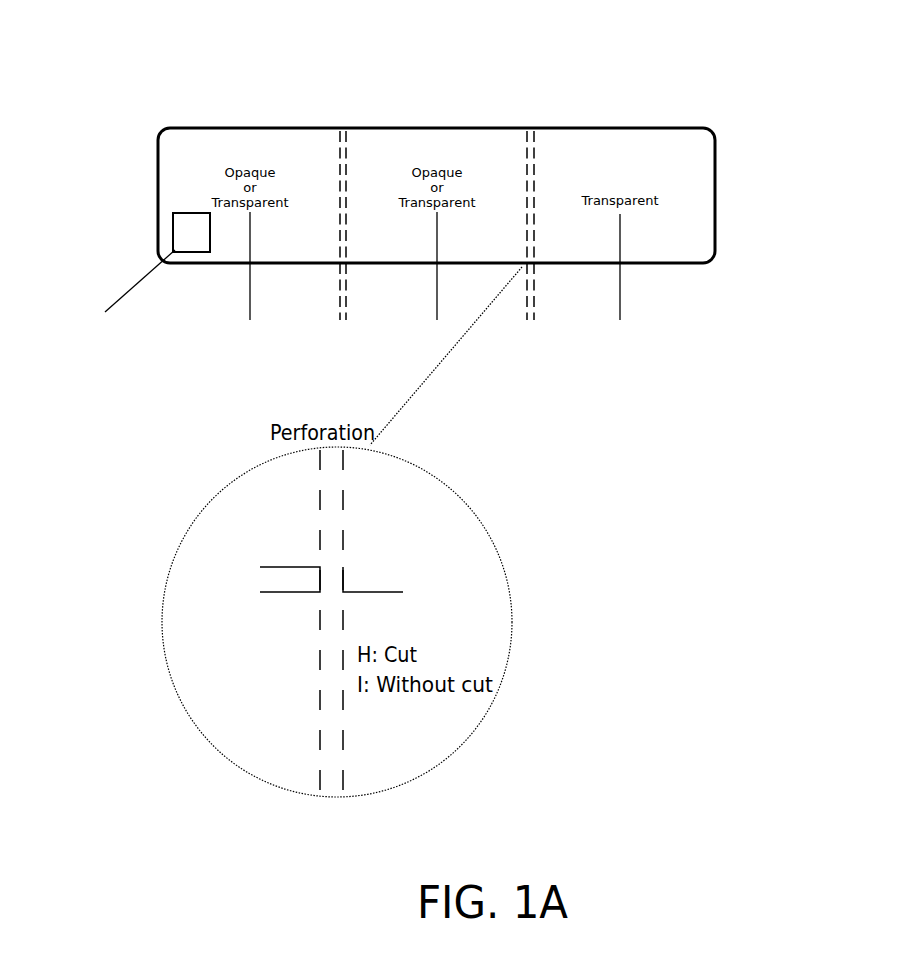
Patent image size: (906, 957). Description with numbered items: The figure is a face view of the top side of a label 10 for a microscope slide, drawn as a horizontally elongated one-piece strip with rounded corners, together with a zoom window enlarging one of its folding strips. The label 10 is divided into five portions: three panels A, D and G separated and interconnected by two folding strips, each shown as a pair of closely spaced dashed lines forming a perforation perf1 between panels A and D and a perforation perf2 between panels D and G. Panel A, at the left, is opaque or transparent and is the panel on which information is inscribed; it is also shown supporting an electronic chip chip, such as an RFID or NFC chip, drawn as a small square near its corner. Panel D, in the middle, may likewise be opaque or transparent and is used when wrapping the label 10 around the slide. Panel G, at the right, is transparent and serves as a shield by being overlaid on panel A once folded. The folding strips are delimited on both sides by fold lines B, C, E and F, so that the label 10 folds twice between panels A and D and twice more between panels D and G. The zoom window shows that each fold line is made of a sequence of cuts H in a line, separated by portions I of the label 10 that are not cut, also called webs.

The label 10 is at (756, 112).
The electronic chip is at (117, 272).
The perforation perf1 is at (339, 176).
The perforation perf2 is at (529, 176).
The panel A is at (250, 274).
The fold line B is at (335, 328).
The fold line C is at (351, 328).
The panel D is at (437, 274).
The fold line E is at (522, 328).
The fold line F is at (538, 328).
The panel G is at (620, 275).
The cut H is at (285, 579).
The portion that is not cut I is at (375, 588).